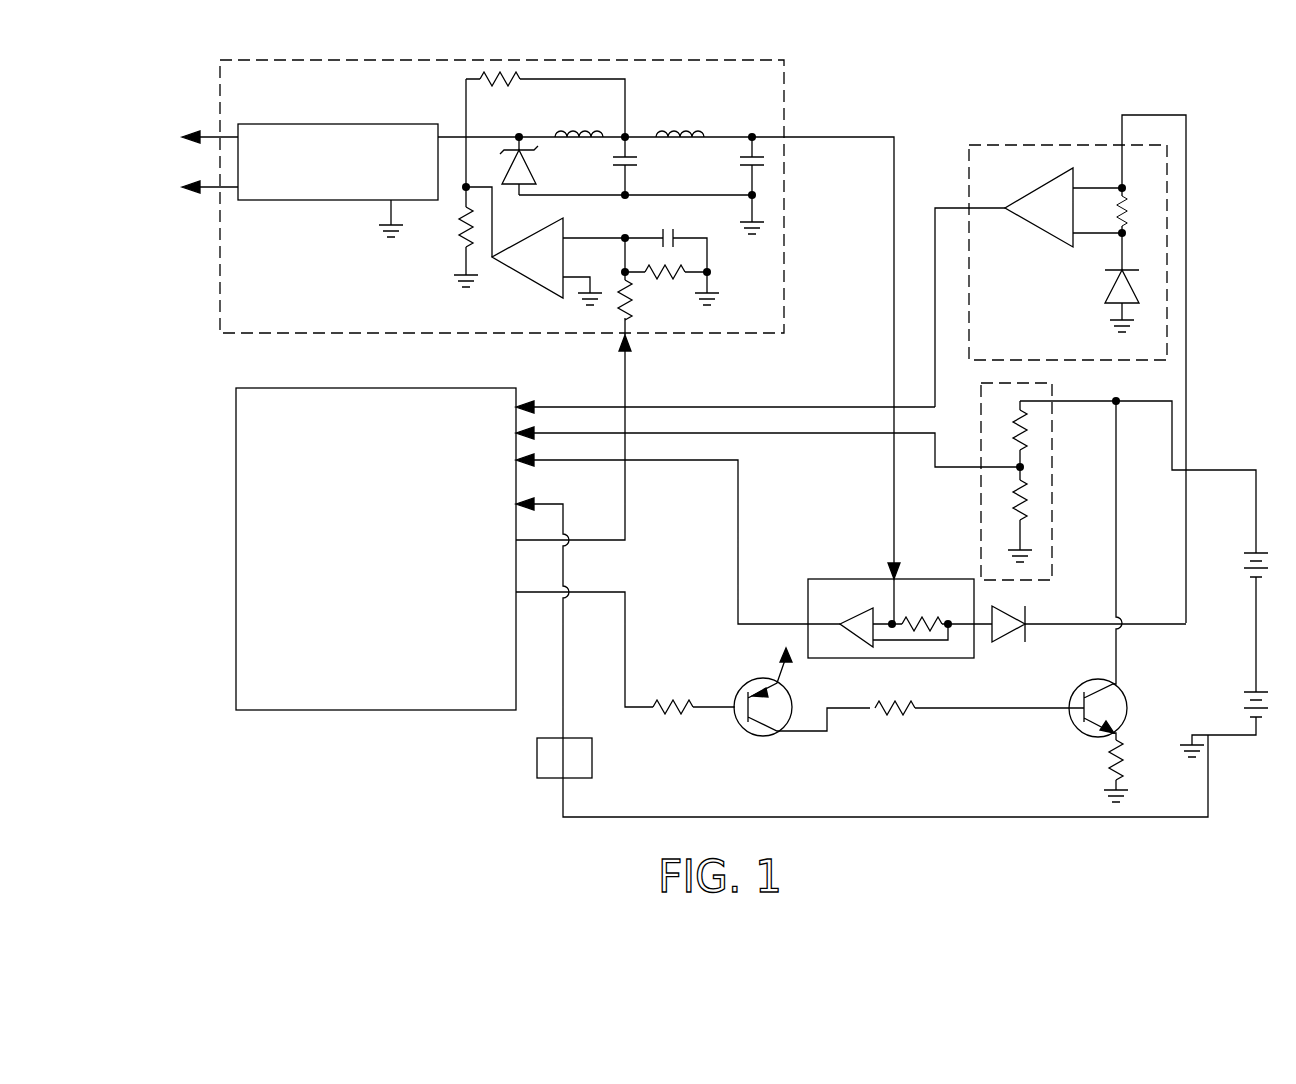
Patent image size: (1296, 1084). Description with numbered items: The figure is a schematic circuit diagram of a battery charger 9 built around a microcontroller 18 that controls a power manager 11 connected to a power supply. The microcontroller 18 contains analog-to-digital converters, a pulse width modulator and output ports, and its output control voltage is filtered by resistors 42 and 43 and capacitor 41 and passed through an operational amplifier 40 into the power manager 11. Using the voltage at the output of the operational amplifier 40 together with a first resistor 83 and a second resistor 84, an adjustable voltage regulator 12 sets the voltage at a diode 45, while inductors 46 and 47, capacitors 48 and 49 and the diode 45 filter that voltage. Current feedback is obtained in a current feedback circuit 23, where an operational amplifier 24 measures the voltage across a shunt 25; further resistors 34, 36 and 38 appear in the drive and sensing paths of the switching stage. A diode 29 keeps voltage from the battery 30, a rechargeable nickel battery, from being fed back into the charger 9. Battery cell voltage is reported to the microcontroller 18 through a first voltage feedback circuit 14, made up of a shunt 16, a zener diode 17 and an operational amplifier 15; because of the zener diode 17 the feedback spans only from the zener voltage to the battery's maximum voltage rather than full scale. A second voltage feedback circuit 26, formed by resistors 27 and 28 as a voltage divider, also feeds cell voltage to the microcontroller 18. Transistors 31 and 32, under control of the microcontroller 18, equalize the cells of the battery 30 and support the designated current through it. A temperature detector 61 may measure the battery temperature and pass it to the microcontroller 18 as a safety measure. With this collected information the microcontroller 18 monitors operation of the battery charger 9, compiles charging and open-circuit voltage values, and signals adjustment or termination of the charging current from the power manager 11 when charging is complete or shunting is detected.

The battery charger 9 is at (823, 106).
The power manager 11 is at (412, 56).
The adjustable voltage regulator 12 is at (350, 216).
The first voltage feedback circuit 14 is at (1034, 140).
The operational amplifier 15 is at (1040, 186).
The shunt 16 is at (1130, 206).
The zener diode 17 is at (1105, 284).
The microcontroller 18 is at (440, 385).
The current feedback circuit 23 is at (950, 566).
The operational amplifier 24 is at (852, 612).
The shunt 25 is at (912, 616).
The second voltage feedback circuit 26 is at (1062, 480).
The resistor 27 is at (1010, 412).
The resistor 28 is at (1010, 508).
The diode 29 is at (1016, 642).
The battery 30 is at (1245, 553).
The transistor 31 is at (1072, 726).
The transistor 32 is at (740, 690).
The resistor 34 is at (672, 700).
The resistor 36 is at (895, 702).
The resistor 38 is at (1122, 760).
The operational amplifier 40 is at (542, 288).
The capacitor 41 is at (676, 222).
The resistor 42 is at (672, 284).
The resistor 43 is at (630, 332).
The diode 45 is at (540, 162).
The inductor 46 is at (576, 132).
The inductor 47 is at (680, 130).
The capacitor 48 is at (642, 166).
The capacitor 49 is at (742, 165).
The temperature detector or sensor 61 is at (537, 762).
The first resistor 83 is at (512, 88).
The second resistor 84 is at (462, 230).